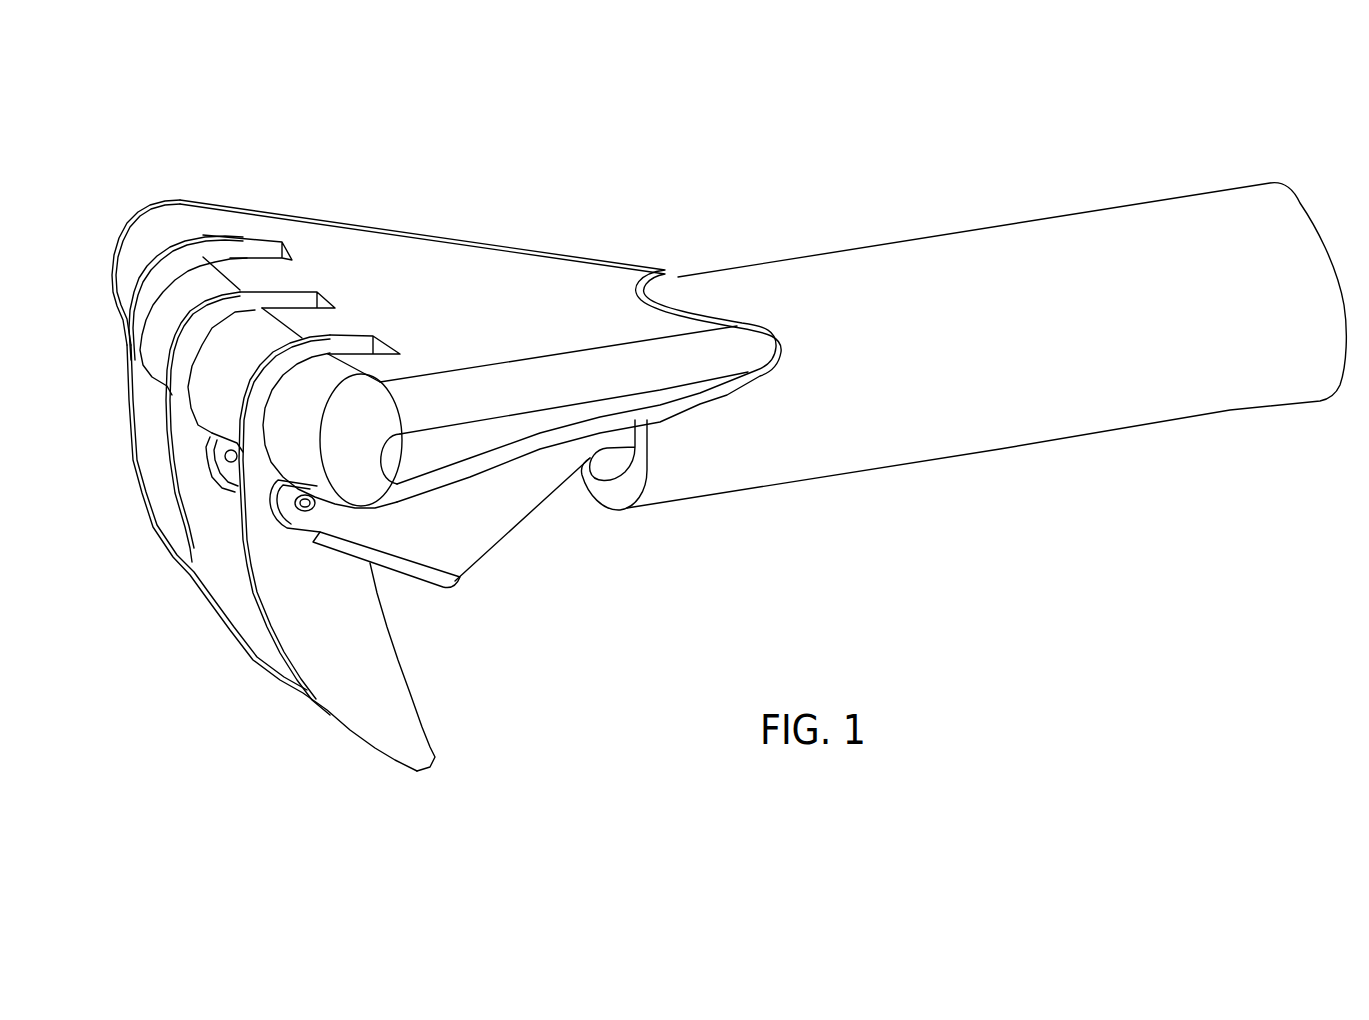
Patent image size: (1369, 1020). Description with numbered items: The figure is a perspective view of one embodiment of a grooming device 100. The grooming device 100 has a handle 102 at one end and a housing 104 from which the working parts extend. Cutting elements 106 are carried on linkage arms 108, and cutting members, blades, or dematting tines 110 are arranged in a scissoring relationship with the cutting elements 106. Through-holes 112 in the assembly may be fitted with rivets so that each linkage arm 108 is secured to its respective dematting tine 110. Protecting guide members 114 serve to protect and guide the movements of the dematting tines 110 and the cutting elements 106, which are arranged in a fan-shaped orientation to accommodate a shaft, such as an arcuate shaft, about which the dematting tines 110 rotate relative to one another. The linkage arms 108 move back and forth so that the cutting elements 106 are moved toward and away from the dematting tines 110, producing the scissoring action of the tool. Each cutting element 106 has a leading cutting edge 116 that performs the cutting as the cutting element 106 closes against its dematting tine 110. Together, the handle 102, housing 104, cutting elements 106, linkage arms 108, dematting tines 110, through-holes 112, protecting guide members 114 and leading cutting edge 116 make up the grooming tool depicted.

The grooming device 100 is at (879, 160).
The handle 102 is at (1101, 200).
The housing 104 is at (402, 228).
The cutting elements 106 is at (497, 527).
The linkage arms 108 is at (612, 472).
The dematting tines 110 is at (141, 497).
The through-holes 112 is at (212, 445).
The protecting guide members 114 is at (142, 212).
The leading cutting edge 116 is at (410, 572).